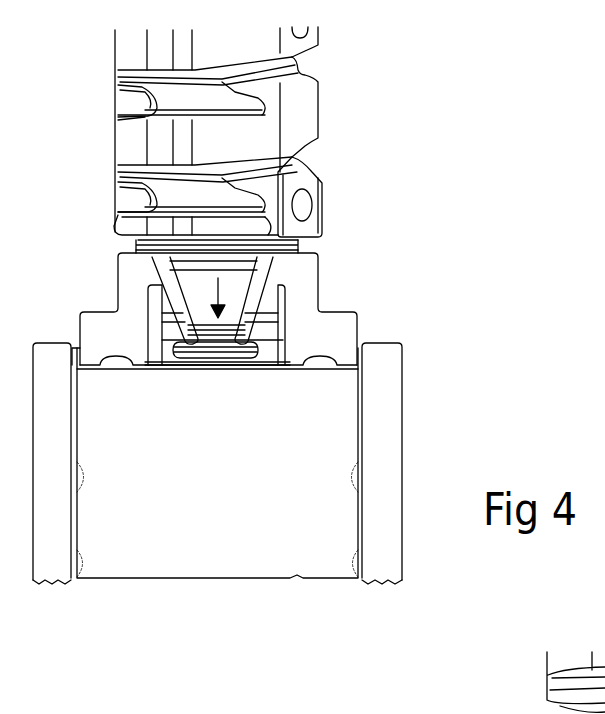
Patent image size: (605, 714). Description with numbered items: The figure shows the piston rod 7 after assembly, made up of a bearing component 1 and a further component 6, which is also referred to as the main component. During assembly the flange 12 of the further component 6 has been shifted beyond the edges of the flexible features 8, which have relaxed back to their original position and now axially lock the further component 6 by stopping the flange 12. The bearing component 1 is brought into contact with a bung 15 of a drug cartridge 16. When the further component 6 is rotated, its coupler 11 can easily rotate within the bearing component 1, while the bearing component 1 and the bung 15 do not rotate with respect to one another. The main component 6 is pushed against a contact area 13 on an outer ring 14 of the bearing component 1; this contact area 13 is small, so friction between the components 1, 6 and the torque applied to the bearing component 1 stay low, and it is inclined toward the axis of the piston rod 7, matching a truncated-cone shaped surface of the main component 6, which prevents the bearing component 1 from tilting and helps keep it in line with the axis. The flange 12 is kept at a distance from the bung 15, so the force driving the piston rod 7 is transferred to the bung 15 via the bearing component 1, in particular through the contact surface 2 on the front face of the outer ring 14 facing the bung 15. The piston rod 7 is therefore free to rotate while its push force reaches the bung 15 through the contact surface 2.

The bearing component 1 is at (320, 267).
The contact surface 2 is at (293, 367).
The further component 6 is at (320, 118).
The piston rod 7 is at (395, 45).
The flexible features 8 is at (260, 304).
The coupler 11 is at (235, 330).
The flange 12 is at (187, 356).
The contact area 13 is at (147, 260).
The outer ring 14 is at (322, 338).
The bung 15 is at (225, 548).
The drug cartridge 16 is at (380, 567).